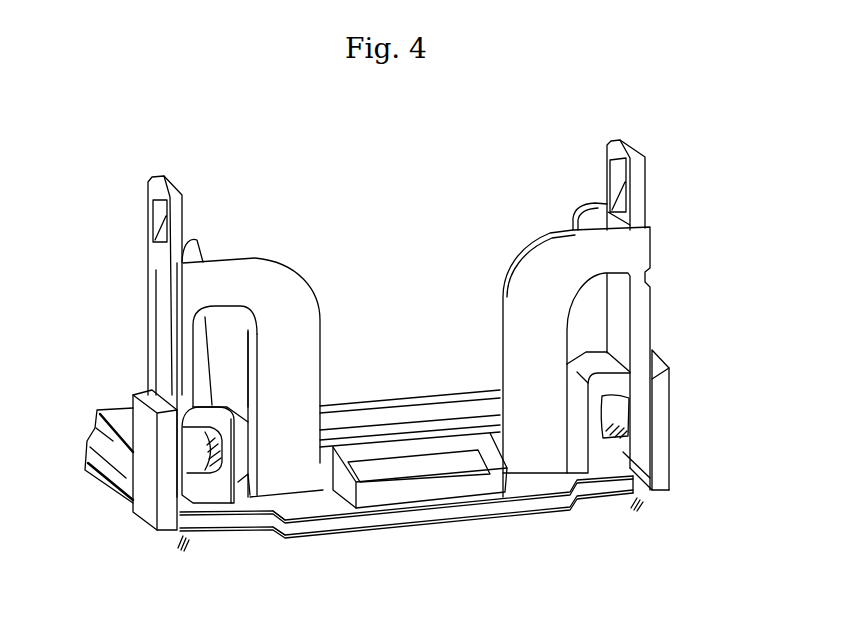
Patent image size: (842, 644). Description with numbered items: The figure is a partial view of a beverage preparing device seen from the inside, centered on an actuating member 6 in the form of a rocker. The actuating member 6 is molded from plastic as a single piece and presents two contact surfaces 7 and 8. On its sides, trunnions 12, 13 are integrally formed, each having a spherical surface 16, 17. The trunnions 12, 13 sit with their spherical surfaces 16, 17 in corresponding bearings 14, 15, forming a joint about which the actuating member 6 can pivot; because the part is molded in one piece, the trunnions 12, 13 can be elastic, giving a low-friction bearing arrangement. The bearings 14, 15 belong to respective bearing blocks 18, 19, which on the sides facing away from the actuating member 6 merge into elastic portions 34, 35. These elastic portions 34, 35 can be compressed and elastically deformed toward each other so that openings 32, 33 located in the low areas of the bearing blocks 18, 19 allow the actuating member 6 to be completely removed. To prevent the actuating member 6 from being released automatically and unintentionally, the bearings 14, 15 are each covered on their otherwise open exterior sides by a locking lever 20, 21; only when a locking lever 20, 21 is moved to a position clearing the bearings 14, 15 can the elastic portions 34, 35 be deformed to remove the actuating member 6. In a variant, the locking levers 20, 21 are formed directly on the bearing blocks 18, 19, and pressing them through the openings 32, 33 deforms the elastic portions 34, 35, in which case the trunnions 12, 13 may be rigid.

The actuating member 6 is at (501, 520).
The contact surface 7 is at (108, 457).
The contact surface 8 is at (305, 505).
The trunnion 12 is at (613, 383).
The trunnion 13 is at (190, 459).
The bearing 14 is at (652, 500).
The bearing 15 is at (183, 470).
The spherical surface 16 is at (614, 417).
The spherical surface 17 is at (193, 452).
The bearing block 18 is at (666, 365).
The bearing block 19 is at (197, 412).
The locking lever 20 is at (662, 472).
The locking lever 21 is at (132, 397).
The opening 32 is at (640, 512).
The opening 33 is at (182, 549).
The elastic portion 34 is at (643, 308).
The elastic portion 35 is at (147, 323).